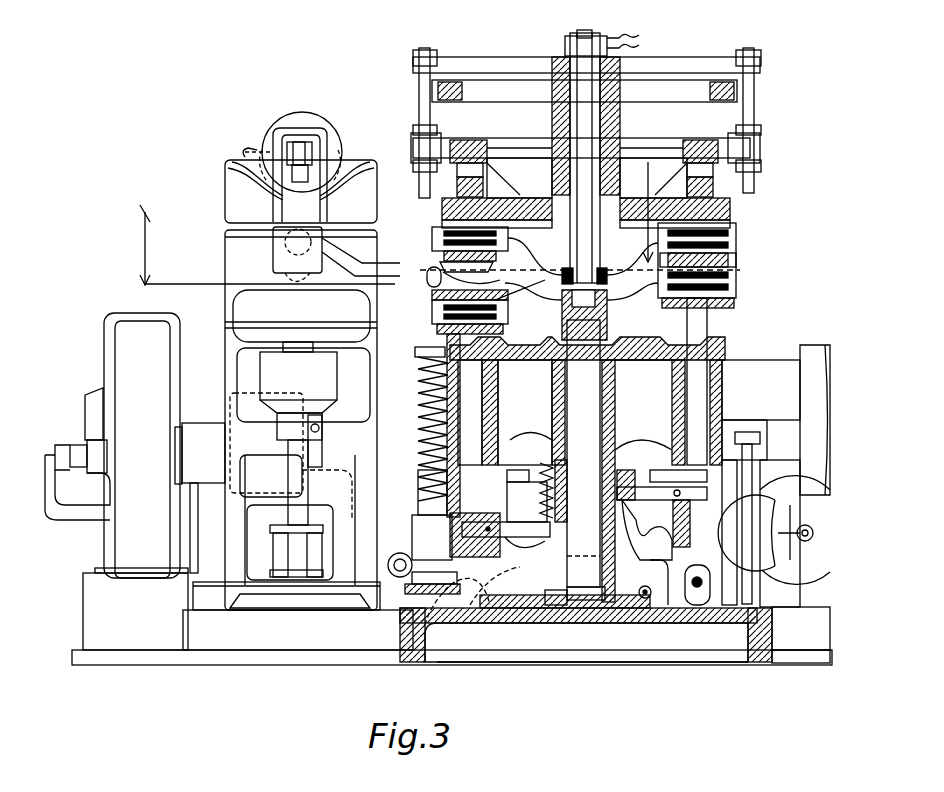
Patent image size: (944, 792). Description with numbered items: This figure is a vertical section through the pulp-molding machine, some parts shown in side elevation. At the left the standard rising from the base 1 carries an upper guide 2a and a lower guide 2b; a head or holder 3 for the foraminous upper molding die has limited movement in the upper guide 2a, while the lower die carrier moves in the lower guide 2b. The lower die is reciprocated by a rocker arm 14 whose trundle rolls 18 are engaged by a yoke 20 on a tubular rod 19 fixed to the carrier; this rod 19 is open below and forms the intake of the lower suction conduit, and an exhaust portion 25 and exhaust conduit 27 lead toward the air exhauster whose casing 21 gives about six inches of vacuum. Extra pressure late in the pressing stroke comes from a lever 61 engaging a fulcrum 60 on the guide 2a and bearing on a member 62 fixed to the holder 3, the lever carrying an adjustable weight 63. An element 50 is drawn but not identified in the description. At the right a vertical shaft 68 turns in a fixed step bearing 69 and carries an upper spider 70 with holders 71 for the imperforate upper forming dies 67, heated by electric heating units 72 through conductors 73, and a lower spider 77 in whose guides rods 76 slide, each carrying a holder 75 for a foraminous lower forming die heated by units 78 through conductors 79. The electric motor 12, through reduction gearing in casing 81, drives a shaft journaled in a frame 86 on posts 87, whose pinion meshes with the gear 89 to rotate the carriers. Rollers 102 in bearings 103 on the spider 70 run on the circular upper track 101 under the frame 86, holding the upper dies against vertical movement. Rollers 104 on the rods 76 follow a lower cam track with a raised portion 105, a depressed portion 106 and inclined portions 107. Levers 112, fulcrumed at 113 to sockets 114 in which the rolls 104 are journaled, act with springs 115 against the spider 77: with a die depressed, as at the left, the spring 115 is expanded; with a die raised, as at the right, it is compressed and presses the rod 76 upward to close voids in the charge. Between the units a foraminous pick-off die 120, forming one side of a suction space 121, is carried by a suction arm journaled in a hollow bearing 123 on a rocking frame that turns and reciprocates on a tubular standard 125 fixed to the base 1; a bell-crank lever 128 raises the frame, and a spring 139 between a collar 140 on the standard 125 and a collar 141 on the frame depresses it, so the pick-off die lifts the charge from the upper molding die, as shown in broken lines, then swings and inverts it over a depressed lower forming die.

The base 1 is at (293, 656).
The upper guide 2a is at (273, 250).
The lower guide 2b is at (268, 382).
The head or holder 3 is at (308, 188).
The electric motor 12 is at (770, 527).
The rocker arm 14 is at (275, 510).
The trundle rolls 18 is at (300, 565).
The tubular rod 19 is at (302, 497).
The yoke 20 is at (270, 532).
The casing of air exhauster 21 is at (170, 398).
The exhaust portion 25 is at (365, 258).
The exhaust conduit 27 is at (200, 450).
The plate 50 is at (240, 328).
The fulcrum 60 is at (312, 135).
The lever 61 is at (297, 142).
The member 62 is at (305, 178).
The weight 63 is at (296, 122).
The imperforate upper forming die 67 is at (495, 260).
The vertical shaft 68 is at (562, 333).
The step bearing 69 is at (560, 570).
The upper carrier or spider 70 is at (525, 212).
The holders 71 is at (442, 230).
The electric heating units 72 is at (445, 252).
The conductors 73 is at (548, 246).
The holder 75 is at (737, 262).
The rod 76 is at (695, 340).
The lower carrier or spider 77 is at (552, 410).
The heating units 78 is at (445, 318).
The conductors 79 is at (540, 300).
The casing 81 is at (800, 390).
The frame 86 is at (760, 148).
The posts 87 is at (748, 180).
The gear 89 is at (745, 86).
The upper track 101 is at (465, 158).
The rollers 102 is at (490, 158).
The bearings 103 is at (478, 182).
The rollers 104 is at (720, 528).
The raised portion 105 is at (668, 600).
The depressed portion 106 is at (490, 630).
The inclined portions 107 is at (520, 563).
The levers 112 is at (512, 530).
The fulcrum 113 is at (488, 528).
The sockets 114 is at (525, 615).
The springs 115 is at (600, 478).
The foraminous pick-off die 120 is at (498, 290).
The suction space 121 is at (445, 304).
The hollow bearing 123 is at (428, 282).
The tubular standard 125 is at (425, 405).
The bell-crank lever 128 is at (420, 585).
The spring 139 is at (420, 383).
The collar 140 is at (418, 352).
The collar 141 is at (430, 500).